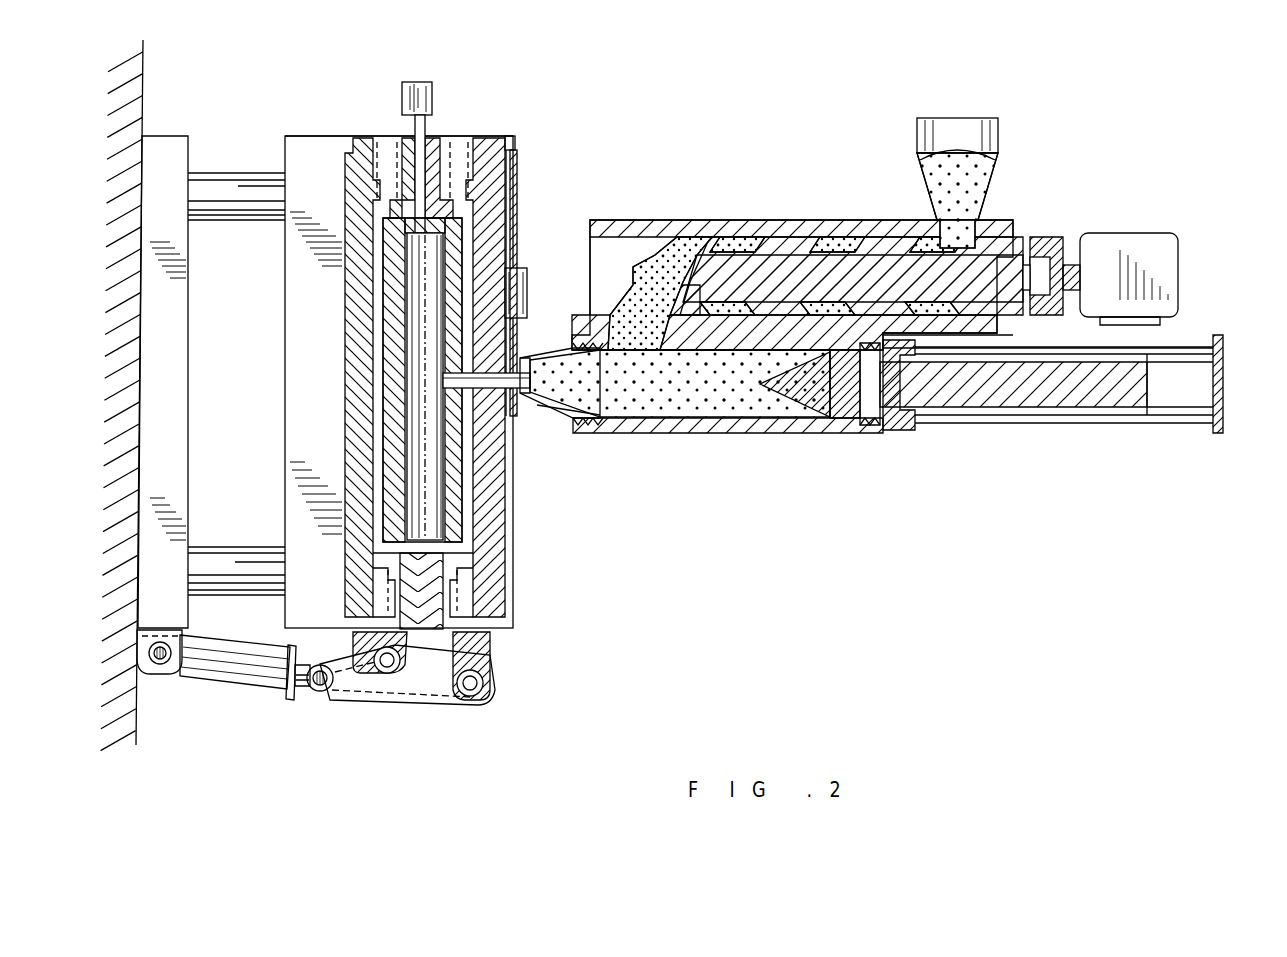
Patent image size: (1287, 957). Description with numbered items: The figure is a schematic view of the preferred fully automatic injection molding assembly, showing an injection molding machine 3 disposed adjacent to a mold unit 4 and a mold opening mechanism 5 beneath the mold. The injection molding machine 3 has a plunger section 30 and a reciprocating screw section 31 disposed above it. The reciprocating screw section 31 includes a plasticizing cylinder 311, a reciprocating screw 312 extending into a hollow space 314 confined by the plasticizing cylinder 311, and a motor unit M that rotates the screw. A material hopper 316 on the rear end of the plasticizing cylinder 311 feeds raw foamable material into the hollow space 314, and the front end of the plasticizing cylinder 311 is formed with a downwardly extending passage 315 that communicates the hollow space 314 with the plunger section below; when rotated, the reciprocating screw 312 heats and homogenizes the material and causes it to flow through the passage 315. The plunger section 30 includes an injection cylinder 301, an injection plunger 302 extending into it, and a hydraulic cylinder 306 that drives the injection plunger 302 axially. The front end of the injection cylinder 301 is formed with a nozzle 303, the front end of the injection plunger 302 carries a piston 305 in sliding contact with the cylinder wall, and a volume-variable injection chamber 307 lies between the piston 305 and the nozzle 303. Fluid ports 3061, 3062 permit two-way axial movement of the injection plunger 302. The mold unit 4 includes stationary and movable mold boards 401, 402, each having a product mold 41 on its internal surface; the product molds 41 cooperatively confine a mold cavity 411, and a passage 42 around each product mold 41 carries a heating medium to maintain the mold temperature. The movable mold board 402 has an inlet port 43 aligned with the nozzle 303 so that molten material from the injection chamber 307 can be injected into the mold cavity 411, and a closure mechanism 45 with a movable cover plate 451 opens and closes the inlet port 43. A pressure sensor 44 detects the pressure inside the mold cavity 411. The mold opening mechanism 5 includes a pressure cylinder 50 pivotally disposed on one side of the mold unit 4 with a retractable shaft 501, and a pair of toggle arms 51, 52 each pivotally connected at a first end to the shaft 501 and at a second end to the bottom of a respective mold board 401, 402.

The mold unit 4 is at (494, 95).
The stationary mold board 401 is at (362, 137).
The movable mold board 402 is at (500, 137).
The mold cavity 411 is at (428, 228).
The pressure sensor 44 is at (418, 82).
The passage 42 is at (470, 505).
The product mold 41 is at (453, 541).
The closure mechanism 45 is at (515, 268).
The movable cover plate 451 is at (517, 345).
The inlet port 43 is at (507, 420).
The mold opening mechanism 5 is at (193, 702).
The pressure cylinder 50 is at (272, 690).
The retractable shaft 501 is at (298, 692).
The toggle arm 51 is at (358, 676).
The toggle arm 52 is at (455, 703).
The injection molding machine 3 is at (800, 190).
The reciprocating screw section 31 is at (801, 234).
The plasticizing cylinder 311 is at (650, 228).
The reciprocating screw 312 is at (745, 262).
The hollow space 314 is at (808, 240).
The downwardly extending passage 315 is at (612, 322).
The material hopper 316 is at (998, 136).
The motor unit M is at (1158, 245).
The plunger section 30 is at (685, 455).
The injection cylinder 301 is at (795, 430).
The injection chamber 307 is at (733, 395).
The nozzle 303 is at (545, 400).
The piston 305 is at (848, 420).
The injection plunger 302 is at (997, 397).
The hydraulic cylinder 306 is at (1175, 410).
The fluid port 3061 is at (1197, 426).
The fluid port 3062 is at (940, 422).